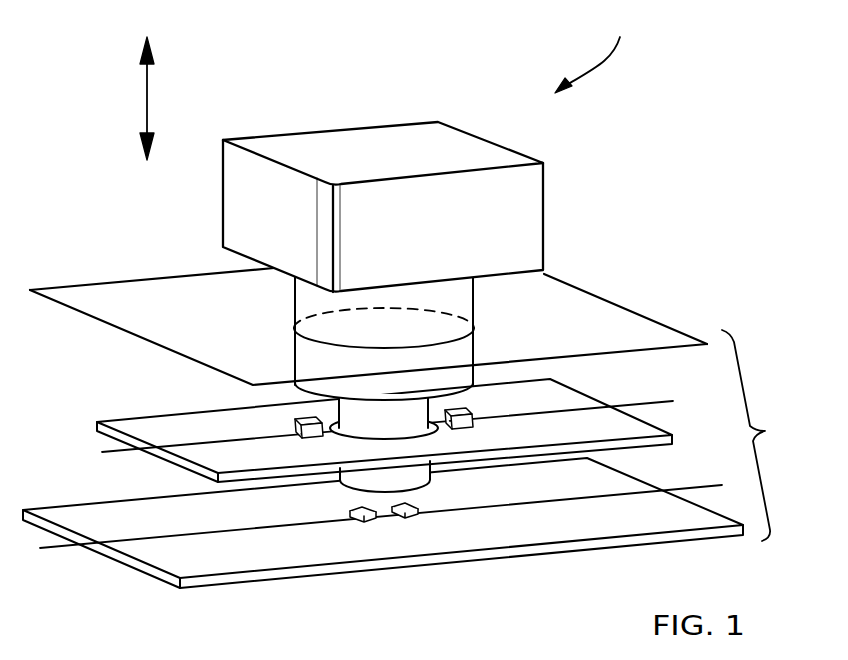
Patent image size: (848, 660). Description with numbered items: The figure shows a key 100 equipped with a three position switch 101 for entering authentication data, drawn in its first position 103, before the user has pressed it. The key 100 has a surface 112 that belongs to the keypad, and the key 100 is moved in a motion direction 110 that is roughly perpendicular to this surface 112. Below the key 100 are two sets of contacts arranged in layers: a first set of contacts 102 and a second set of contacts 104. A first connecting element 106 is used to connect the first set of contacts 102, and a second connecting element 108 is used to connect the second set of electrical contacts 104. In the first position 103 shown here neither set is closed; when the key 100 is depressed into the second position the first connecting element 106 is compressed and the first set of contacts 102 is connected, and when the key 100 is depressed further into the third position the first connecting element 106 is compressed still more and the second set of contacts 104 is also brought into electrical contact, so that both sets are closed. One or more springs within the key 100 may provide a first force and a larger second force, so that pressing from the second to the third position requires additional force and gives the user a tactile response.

The key 100 is at (436, 132).
The three position switch 101 is at (766, 431).
The first set of contacts 102 is at (297, 424).
The first position 103 is at (598, 48).
The second set of contacts 104 is at (368, 523).
The first connecting element 106 is at (310, 302).
The second connecting element 108 is at (417, 477).
The motion direction 110 is at (147, 98).
The surface 112 is at (606, 299).